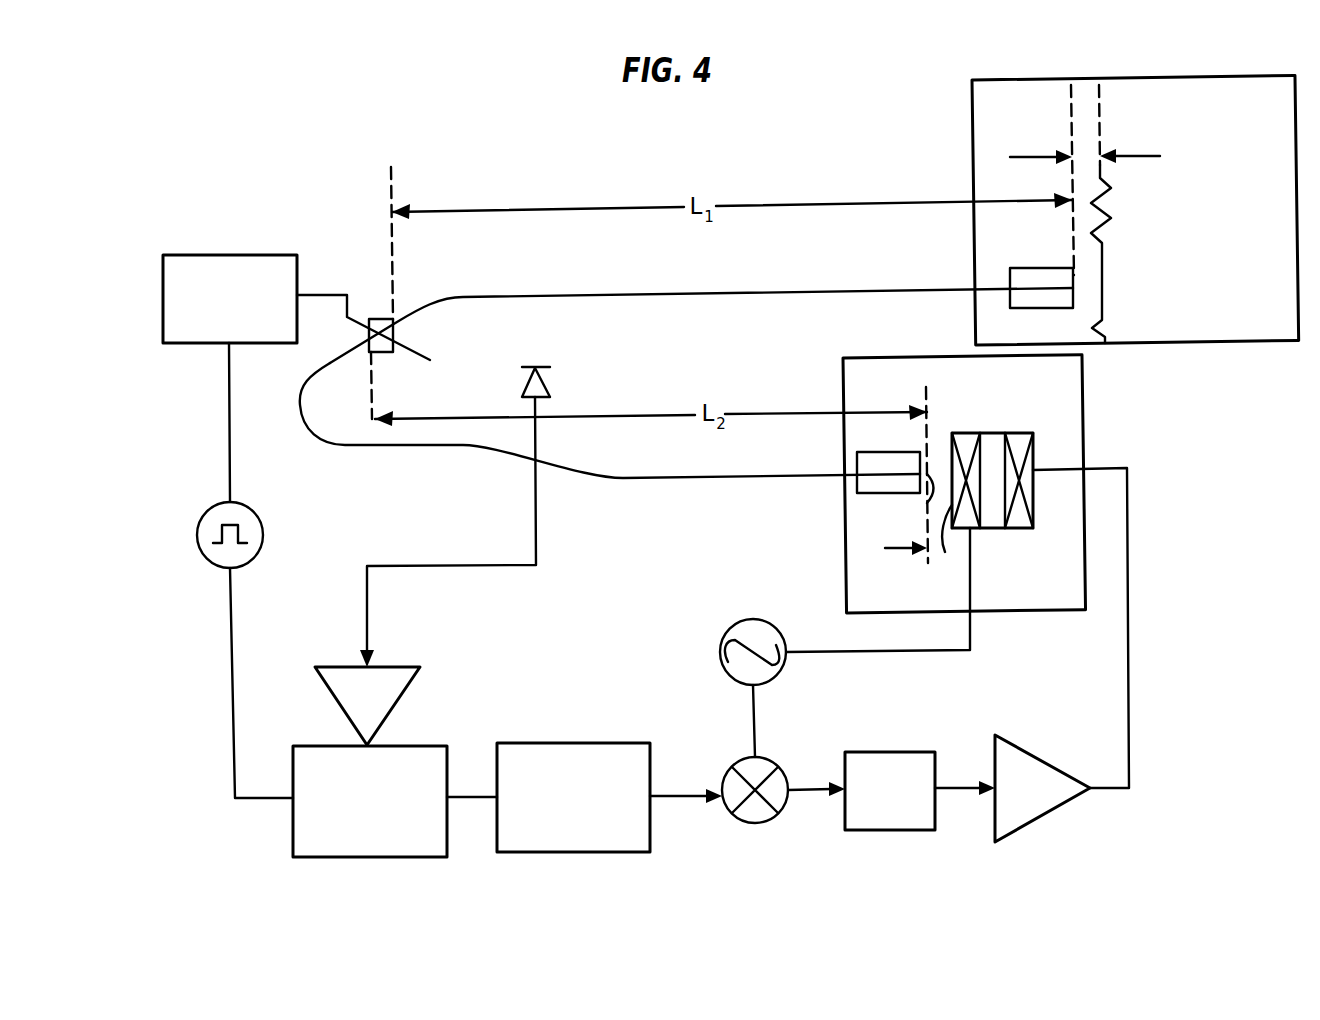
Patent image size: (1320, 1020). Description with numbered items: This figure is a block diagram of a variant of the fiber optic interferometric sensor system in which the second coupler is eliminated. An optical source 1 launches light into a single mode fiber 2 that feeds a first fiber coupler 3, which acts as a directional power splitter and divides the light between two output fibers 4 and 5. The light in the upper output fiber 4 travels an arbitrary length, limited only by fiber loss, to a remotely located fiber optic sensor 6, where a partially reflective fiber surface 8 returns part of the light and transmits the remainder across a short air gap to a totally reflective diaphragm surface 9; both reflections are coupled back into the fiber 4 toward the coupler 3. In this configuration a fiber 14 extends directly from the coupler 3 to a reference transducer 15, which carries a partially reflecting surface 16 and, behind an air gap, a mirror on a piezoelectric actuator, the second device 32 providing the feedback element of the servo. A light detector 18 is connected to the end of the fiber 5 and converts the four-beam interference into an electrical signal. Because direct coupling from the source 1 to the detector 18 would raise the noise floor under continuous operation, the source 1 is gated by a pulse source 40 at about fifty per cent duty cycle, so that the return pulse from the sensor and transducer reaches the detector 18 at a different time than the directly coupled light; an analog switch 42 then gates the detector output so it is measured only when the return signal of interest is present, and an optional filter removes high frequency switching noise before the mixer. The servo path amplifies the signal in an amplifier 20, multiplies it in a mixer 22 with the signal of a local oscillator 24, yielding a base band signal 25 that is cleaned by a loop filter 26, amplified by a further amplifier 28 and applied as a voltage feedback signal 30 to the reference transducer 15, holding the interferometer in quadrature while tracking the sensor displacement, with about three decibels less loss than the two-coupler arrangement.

The optical source 1 is at (247, 255).
The single mode fiber 2 is at (352, 312).
The first fiber coupler 3 is at (373, 354).
The output fiber 4 is at (672, 274).
The output fiber 5 is at (408, 347).
The fiber optic sensor 6 is at (972, 172).
The partially reflective fiber surface 8 is at (1075, 302).
The totally reflective diaphragm surface 9 is at (1097, 308).
The fiber 14 is at (708, 476).
The reference transducer 15 is at (974, 398).
The partially reflecting surface 16 is at (928, 505).
The light detector 18 is at (540, 365).
The amplifier 20 is at (398, 672).
The mixer 22 is at (738, 812).
The local oscillator 24 is at (718, 652).
The base band signal 25 is at (559, 838).
The loop filter 26 is at (852, 752).
The amplifier 28 is at (1018, 746).
The voltage feedback signal 30 is at (1130, 687).
The second piezoelectric device 32 is at (1022, 530).
The pulse source 40 is at (250, 510).
The analog switch 42 is at (357, 843).